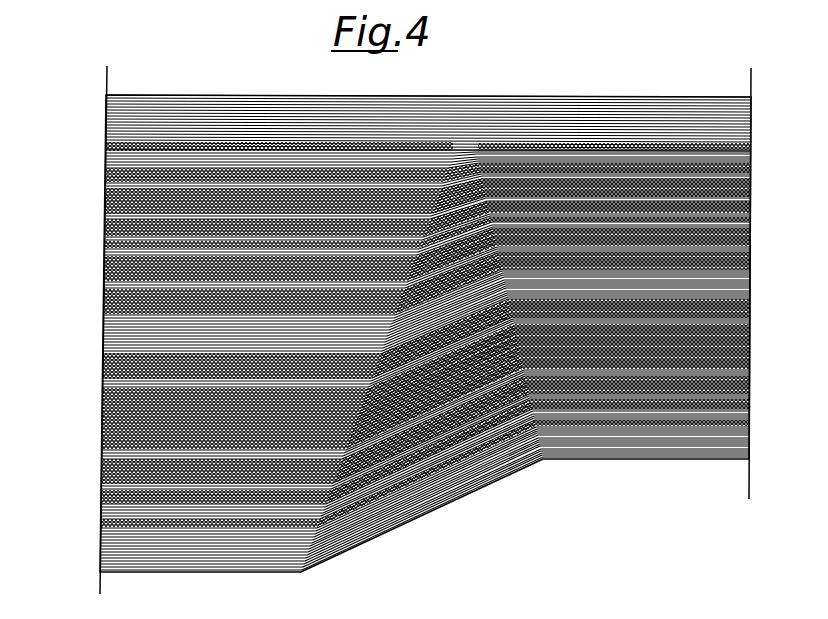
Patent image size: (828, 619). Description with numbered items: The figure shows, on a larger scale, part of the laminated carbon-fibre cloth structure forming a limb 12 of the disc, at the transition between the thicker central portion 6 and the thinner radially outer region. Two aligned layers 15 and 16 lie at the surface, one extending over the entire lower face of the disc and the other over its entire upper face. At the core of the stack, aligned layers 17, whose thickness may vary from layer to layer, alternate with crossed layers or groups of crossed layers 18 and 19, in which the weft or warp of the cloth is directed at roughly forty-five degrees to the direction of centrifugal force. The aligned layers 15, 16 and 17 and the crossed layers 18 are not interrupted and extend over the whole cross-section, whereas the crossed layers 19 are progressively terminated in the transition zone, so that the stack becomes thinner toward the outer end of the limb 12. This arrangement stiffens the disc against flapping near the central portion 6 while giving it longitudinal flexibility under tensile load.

The central portion 6 is at (177, 572).
The limb 12 is at (695, 462).
The aligned layer 15 is at (632, 432).
The aligned layer 16 is at (619, 125).
The aligned layers 17 is at (752, 204).
The crossed layers 18 is at (110, 160).
The crossed layers 19 is at (238, 147).